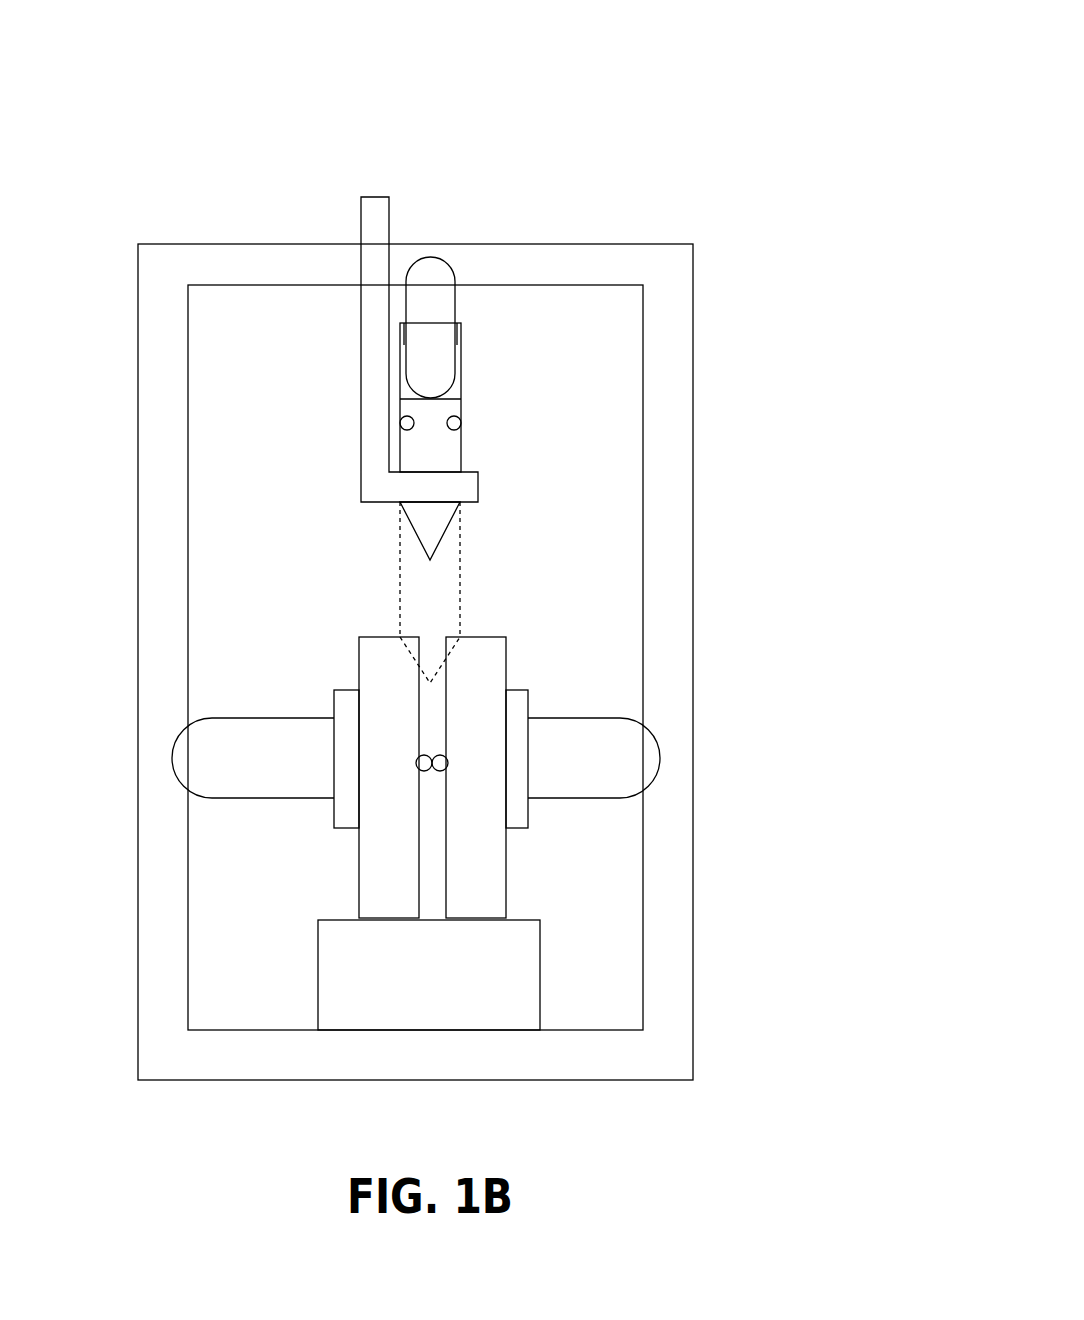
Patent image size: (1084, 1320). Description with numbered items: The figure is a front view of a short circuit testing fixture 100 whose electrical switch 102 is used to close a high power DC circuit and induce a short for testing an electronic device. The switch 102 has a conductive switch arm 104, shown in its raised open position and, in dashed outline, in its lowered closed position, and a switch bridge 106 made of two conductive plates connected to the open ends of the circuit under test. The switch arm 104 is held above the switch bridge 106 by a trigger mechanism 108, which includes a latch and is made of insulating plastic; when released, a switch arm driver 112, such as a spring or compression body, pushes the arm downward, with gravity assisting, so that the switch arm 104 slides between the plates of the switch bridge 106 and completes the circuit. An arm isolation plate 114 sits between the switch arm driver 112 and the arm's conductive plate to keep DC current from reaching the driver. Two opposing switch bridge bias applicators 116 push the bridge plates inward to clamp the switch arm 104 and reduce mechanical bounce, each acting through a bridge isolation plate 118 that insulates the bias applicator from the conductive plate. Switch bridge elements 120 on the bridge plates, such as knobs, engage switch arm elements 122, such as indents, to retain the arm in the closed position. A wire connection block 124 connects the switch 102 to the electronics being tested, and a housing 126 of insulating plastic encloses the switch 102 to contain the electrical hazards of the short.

The short circuit testing fixture 100 is at (750, 39).
The electrical switch 102 is at (292, 466).
The switch arm 104 is at (462, 455).
The switch bridge 106 is at (358, 652).
The trigger mechanism 108 is at (379, 197).
The switch arm driver 112 is at (455, 285).
The arm isolation plate 114 is at (462, 398).
The switch bridge bias applicator 116 is at (302, 718).
The bridge isolation plate 118 is at (334, 810).
The switch bridge element 120 is at (428, 772).
The switch arm element 122 is at (410, 428).
The wire connection block 124 is at (318, 978).
The housing 126 is at (188, 244).